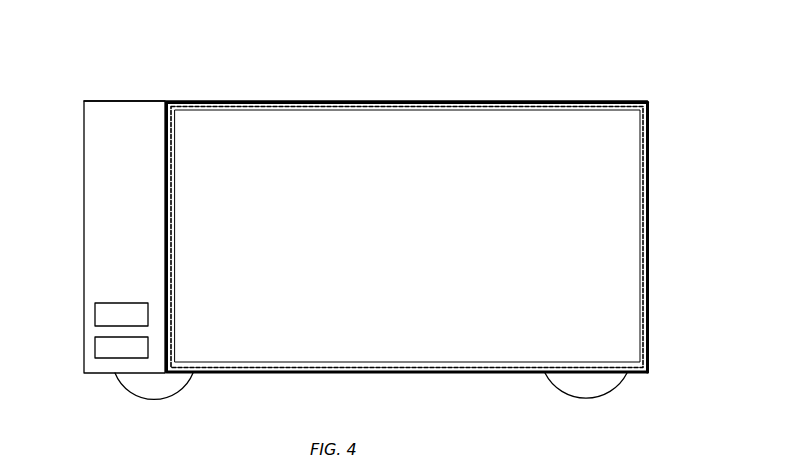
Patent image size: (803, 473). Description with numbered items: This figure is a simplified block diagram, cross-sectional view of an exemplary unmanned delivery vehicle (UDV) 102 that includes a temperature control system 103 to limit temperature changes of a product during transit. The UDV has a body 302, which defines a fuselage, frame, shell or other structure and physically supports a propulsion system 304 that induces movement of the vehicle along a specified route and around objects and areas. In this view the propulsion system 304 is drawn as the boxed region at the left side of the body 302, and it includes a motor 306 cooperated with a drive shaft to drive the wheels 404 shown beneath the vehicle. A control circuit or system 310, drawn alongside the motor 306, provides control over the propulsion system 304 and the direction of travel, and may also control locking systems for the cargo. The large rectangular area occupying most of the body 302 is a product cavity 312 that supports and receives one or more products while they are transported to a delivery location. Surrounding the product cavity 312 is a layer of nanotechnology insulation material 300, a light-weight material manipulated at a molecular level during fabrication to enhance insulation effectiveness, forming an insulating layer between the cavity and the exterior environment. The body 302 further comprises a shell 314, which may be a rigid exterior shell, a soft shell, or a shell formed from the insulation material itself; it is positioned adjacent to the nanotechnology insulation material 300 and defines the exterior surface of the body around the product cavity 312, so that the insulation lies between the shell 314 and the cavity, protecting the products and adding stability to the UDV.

The unmanned delivery vehicle 102 is at (662, 78).
The temperature control system 103 is at (558, 100).
The nanotechnology insulation material 300 is at (297, 105).
The body 302 is at (205, 100).
The propulsion system 304 is at (117, 395).
The motor 306 is at (102, 345).
The control circuit 310 is at (102, 315).
The product cavity 312 is at (602, 218).
The shell 314 is at (650, 292).
The wheel 404 is at (158, 390).